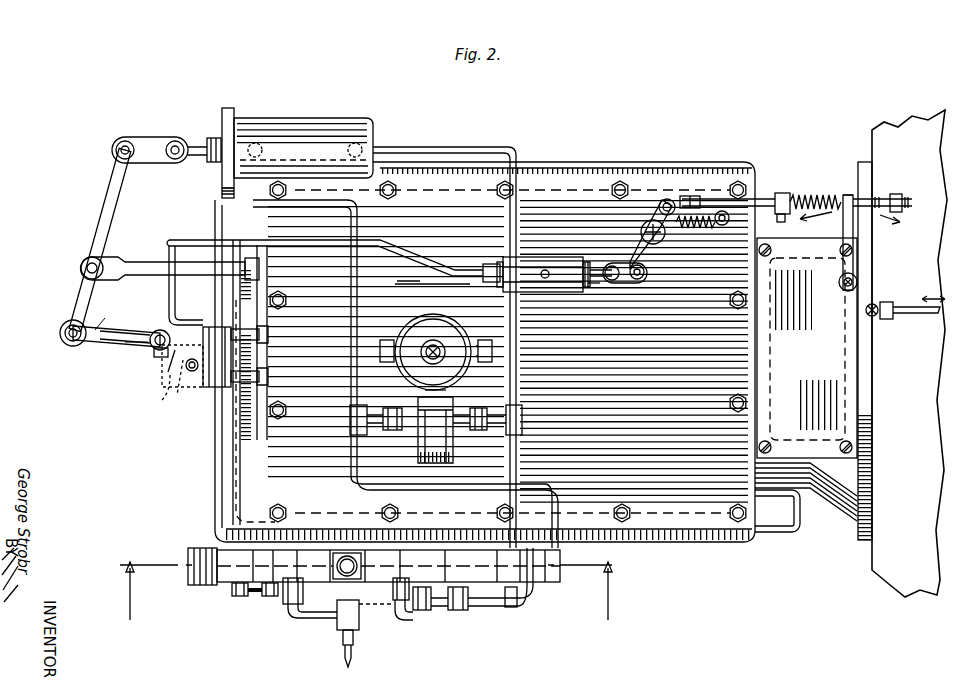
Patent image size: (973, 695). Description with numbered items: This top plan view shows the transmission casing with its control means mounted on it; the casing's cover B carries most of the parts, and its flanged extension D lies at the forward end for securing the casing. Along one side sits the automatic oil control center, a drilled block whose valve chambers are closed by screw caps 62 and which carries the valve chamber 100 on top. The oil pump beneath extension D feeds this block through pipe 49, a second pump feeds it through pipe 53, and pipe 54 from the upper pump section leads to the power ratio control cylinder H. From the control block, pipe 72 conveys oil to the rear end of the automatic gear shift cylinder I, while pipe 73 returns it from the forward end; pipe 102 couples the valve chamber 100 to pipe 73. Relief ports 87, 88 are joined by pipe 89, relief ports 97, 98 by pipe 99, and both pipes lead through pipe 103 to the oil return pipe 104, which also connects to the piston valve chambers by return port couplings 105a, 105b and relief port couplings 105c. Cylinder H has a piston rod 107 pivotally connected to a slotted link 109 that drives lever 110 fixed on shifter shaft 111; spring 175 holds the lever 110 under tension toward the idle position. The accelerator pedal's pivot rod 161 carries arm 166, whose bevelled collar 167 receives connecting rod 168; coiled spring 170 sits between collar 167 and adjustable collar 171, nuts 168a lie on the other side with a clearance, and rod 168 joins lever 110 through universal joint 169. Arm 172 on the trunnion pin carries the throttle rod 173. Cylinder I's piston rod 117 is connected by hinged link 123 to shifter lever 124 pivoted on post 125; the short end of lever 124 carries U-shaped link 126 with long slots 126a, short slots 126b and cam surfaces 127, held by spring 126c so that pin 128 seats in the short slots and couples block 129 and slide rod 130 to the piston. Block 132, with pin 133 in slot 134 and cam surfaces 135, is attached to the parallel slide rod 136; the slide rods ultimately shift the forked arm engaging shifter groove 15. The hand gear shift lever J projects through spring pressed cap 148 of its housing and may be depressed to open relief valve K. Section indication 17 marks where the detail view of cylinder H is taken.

The cover B is at (715, 162).
The automatic gear shift cylinder I is at (318, 118).
The power ratio control cylinder H is at (545, 257).
The hand gear shift lever J is at (415, 335).
The relief valve K is at (428, 440).
The flanged extension D is at (840, 515).
The piston rod 117 is at (210, 136).
The hinged link 123 is at (150, 137).
The shifter lever 124 is at (112, 200).
The post 125 is at (150, 262).
The link 126 is at (100, 345).
The long slots 126a is at (132, 310).
The short slots 126b is at (132, 350).
The spring 126c is at (68, 345).
The cam surfaces 127 is at (160, 372).
The pin 128 is at (158, 330).
The block 129 is at (183, 320).
The slide rod 130 is at (262, 333).
The block 132 is at (186, 396).
The pin 133 is at (192, 372).
The slot 134 is at (170, 395).
The cam surfaces 135 is at (172, 377).
The slide rod 136 is at (262, 377).
The pipe 53 is at (236, 503).
The pipe 54 is at (192, 240).
The pipe 72 is at (357, 340).
The pipe 73 is at (460, 147).
The adjustable collar 171 is at (419, 292).
The section line 17 is at (600, 289).
The piston rod 107 is at (608, 285).
The slotted link 109 is at (628, 285).
The lever 110 is at (658, 210).
The shifter shaft 111 is at (658, 245).
The spring 175 is at (700, 230).
The universal joint 169 is at (700, 196).
The connecting rod 168 is at (778, 193).
The coiled spring 170 is at (815, 195).
The bevelled collar 167 is at (846, 195).
The arm 166 is at (853, 258).
The rod 161 is at (857, 280).
The nuts 168a is at (893, 194).
The arm 172 is at (888, 302).
The throttle rod 173 is at (900, 315).
The pipe 49 is at (768, 538).
The spring pressed cap 148 is at (418, 385).
The screw caps 62 is at (188, 556).
The valve chamber 100 is at (337, 580).
The relief port couplings 105c is at (521, 629).
The return port coupling 105a is at (262, 592).
The relief port 87 is at (283, 590).
The relief port 97 is at (290, 604).
The pipe 99 is at (322, 616).
The pipe 89 is at (336, 612).
The oil return pipe 104 is at (338, 625).
The pipe 103 is at (352, 660).
The relief port 98 is at (397, 604).
The relief port 88 is at (404, 625).
The return port coupling 105b is at (424, 612).
The pipe 102 is at (460, 612).
The shifter groove 15 is at (368, 605).